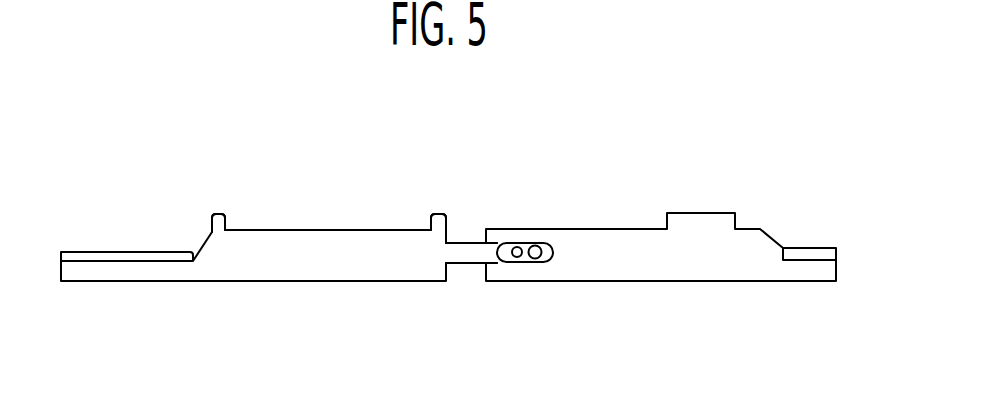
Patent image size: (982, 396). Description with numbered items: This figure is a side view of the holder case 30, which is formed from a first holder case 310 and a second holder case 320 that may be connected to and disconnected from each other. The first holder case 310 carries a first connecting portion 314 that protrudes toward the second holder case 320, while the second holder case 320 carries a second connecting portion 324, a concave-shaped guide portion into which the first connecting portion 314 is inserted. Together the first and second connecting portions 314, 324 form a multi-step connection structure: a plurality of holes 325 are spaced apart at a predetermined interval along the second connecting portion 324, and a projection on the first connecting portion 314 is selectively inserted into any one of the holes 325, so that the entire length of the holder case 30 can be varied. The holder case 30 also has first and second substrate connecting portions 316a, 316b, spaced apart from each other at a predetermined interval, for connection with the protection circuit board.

The holder case 30 is at (448, 225).
The first holder case 310 is at (306, 225).
The first connecting portion 314 is at (462, 253).
The first substrate connecting portion 316a is at (214, 214).
The second substrate connecting portion 316b is at (440, 214).
The second holder case 320 is at (762, 222).
The second connecting portion 324 is at (544, 262).
The holes 325 is at (516, 258).